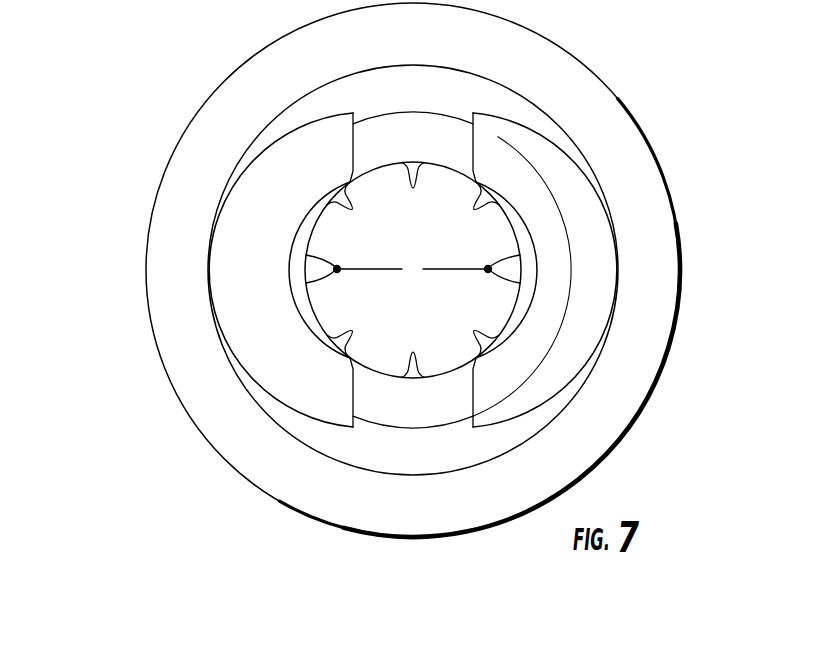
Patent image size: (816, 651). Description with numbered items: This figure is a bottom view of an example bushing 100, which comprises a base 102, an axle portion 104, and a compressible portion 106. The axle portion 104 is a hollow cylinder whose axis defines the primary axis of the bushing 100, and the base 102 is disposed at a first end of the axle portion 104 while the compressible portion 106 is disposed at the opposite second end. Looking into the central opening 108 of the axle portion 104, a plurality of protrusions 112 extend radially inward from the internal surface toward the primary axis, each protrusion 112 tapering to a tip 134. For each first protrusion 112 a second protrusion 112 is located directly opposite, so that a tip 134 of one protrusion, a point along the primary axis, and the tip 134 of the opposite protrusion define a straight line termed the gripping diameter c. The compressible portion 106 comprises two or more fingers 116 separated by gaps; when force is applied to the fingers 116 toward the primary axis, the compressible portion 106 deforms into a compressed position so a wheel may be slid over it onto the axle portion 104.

The bushing 100 is at (152, 44).
The base 102 is at (293, 480).
The axle portion 104 is at (465, 97).
The compressible portion 106 is at (458, 297).
The central opening 108 is at (473, 270).
The protrusions 112 is at (473, 210).
The fingers 116 is at (535, 407).
The tip 134 is at (463, 289).